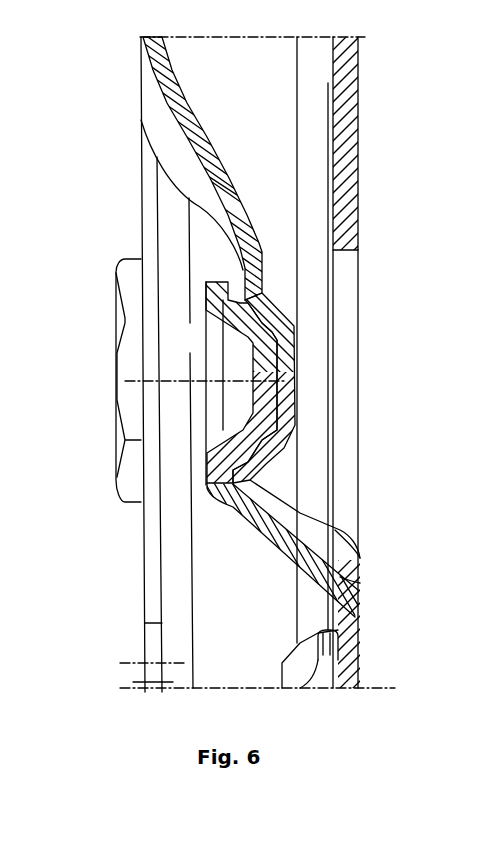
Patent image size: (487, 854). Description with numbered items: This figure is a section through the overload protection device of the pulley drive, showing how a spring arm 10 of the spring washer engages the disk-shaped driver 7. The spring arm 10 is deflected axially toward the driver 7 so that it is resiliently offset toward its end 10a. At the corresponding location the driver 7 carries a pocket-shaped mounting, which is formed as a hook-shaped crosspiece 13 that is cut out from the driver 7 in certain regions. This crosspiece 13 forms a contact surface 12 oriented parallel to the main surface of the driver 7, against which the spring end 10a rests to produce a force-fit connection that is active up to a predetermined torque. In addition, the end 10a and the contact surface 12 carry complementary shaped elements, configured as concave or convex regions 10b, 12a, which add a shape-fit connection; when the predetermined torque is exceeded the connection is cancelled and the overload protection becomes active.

The disk-shaped driver 7 is at (358, 633).
The spring arm 10 is at (232, 178).
The end of the spring arm 10a is at (262, 283).
The concave or convex region 10b is at (292, 385).
The contact surface 12 is at (243, 387).
The concave or convex region 12a is at (390, 435).
The hook-shaped crosspiece 13 is at (233, 505).